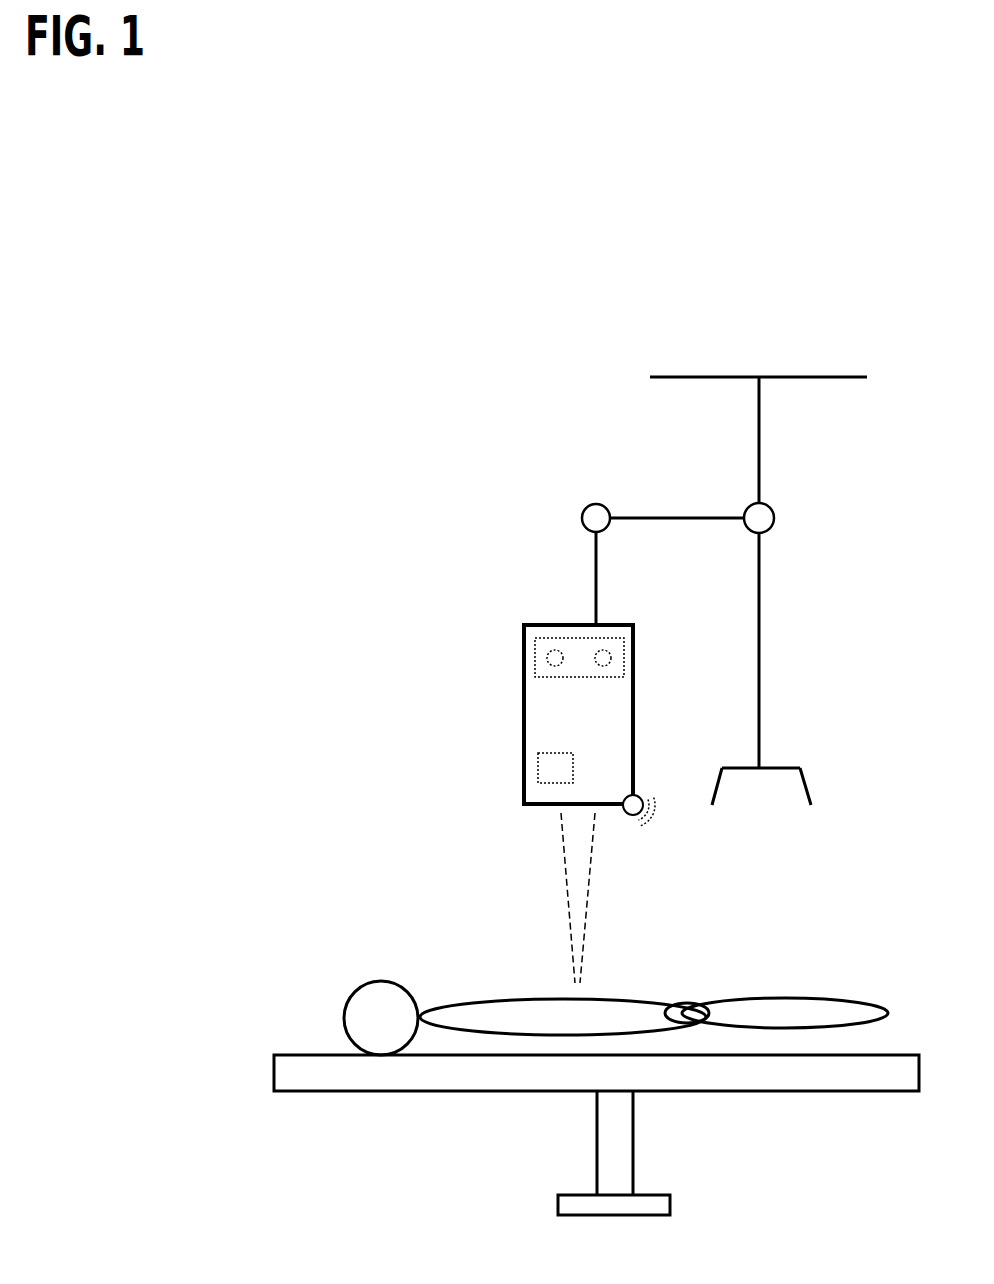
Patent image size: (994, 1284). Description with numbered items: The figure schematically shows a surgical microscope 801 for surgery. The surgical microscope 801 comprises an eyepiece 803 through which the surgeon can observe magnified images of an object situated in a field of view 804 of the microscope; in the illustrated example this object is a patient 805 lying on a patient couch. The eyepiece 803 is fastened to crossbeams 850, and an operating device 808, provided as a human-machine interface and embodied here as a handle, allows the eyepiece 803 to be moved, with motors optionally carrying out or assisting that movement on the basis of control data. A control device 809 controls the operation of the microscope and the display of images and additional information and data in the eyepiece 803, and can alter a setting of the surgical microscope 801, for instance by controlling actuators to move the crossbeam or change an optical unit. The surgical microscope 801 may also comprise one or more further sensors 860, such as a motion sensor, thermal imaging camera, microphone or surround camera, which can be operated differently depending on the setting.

The surgical microscope 801 is at (790, 484).
The crossbeams 850 is at (581, 519).
The eyepiece 803 is at (622, 664).
The control device 809 is at (550, 768).
The further sensors 860 is at (642, 797).
The field of view 804 is at (587, 878).
The patient 805 is at (645, 992).
The operating device 808 is at (811, 779).